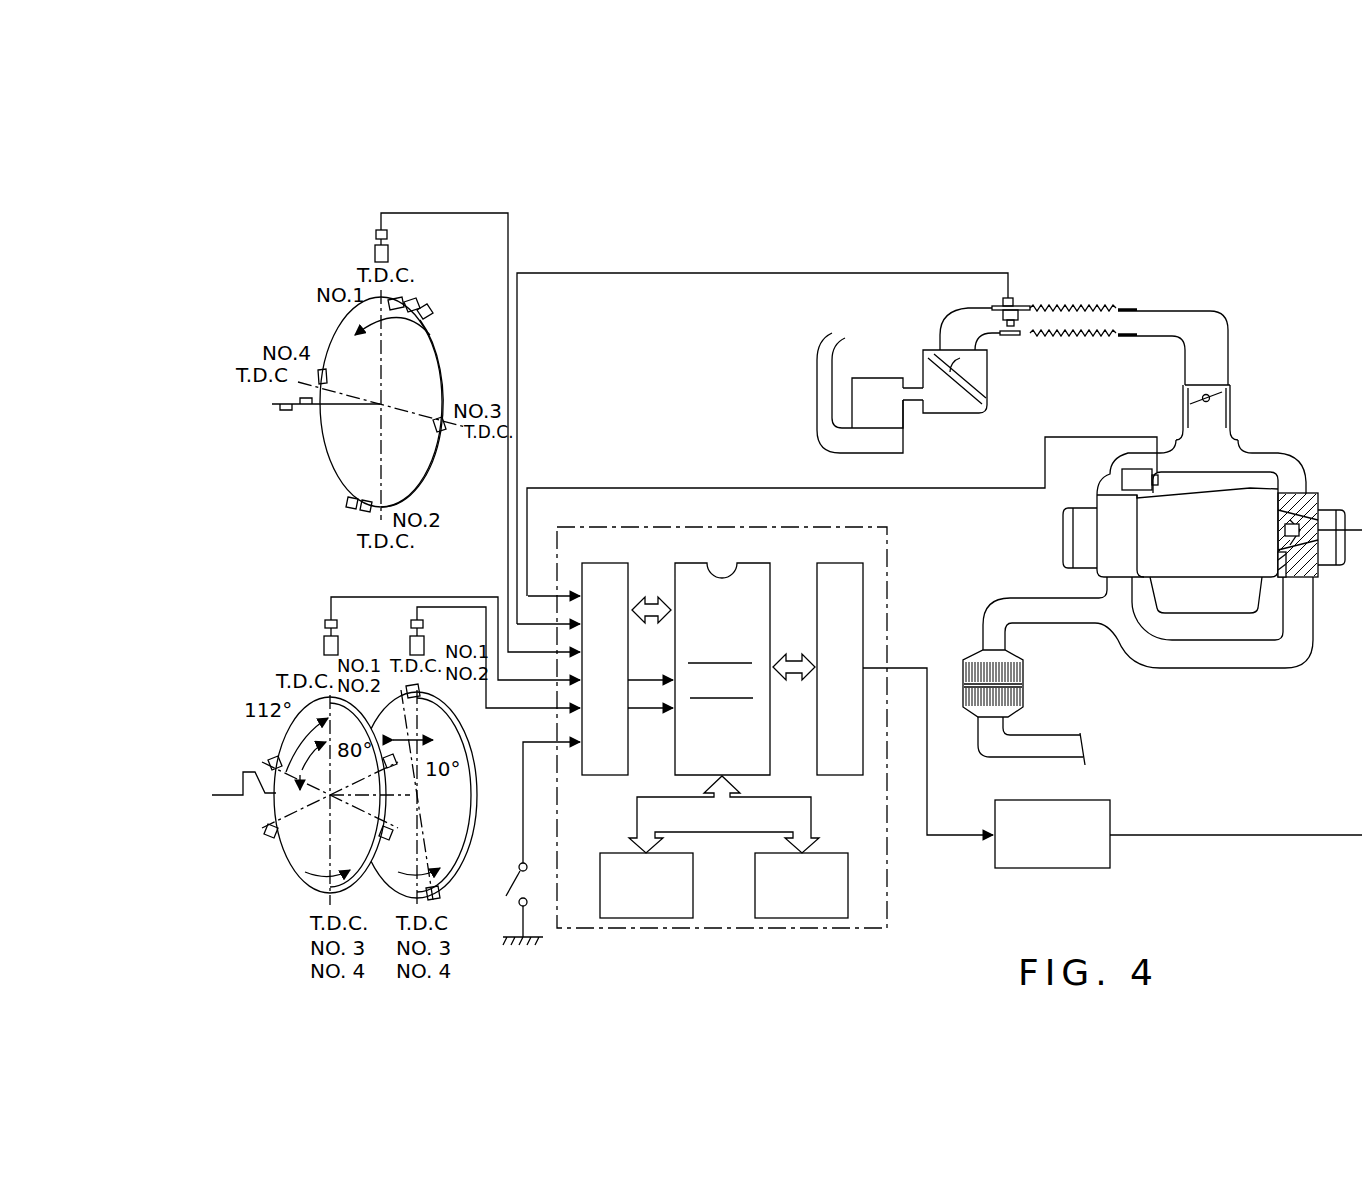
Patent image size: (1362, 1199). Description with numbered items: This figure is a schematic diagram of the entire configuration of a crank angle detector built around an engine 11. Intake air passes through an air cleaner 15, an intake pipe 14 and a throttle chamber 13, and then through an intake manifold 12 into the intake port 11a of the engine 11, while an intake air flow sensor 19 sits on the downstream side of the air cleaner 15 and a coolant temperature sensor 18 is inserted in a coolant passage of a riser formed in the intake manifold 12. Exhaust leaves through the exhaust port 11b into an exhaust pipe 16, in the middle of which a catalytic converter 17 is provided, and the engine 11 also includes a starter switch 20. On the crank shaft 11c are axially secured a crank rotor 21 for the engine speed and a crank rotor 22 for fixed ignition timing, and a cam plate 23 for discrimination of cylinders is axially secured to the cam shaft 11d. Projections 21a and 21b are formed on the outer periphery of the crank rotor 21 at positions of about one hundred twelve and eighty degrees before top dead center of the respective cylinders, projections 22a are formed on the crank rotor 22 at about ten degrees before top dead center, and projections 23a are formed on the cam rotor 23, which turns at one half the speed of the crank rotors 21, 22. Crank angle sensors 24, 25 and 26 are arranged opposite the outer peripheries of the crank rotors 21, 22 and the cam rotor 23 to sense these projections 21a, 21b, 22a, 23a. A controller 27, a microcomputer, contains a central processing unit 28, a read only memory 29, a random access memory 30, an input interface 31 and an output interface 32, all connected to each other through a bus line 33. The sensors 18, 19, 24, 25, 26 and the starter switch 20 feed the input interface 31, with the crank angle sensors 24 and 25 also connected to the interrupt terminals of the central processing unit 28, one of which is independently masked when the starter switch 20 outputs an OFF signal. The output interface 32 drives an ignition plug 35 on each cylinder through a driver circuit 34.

The engine 11 is at (1320, 580).
The intake port 11a is at (1300, 500).
The exhaust port 11b is at (1280, 566).
The crank shaft 11c is at (232, 798).
The cam shaft 11d is at (300, 410).
The intake manifold 12 is at (1262, 452).
The throttle chamber 13 is at (1218, 413).
The intake pipe 14 is at (1172, 311).
The air cleaner 15 is at (926, 355).
The exhaust pipe 16 is at (1230, 660).
The catalytic converter 17 is at (1023, 686).
The coolant temperature sensor 18 is at (1157, 490).
The intake air flow sensor 19 is at (1020, 302).
The starter switch 20 is at (518, 868).
The crank rotor for engine speed 21 is at (300, 858).
The projection 21a is at (412, 784).
The projection 21b is at (274, 760).
The crank rotor for fixed ignition timing 22 is at (468, 772).
The projection 22a is at (455, 712).
The cam plate 23 is at (418, 472).
The projection 23a is at (410, 300).
The crank angle sensor 24 is at (322, 646).
The crank angle sensor 25 is at (410, 646).
The crank angle sensor 26 is at (372, 254).
The controller 27 is at (890, 548).
The central processing unit 28 is at (772, 613).
The read only memory 29 is at (835, 853).
The random access memory 30 is at (610, 852).
The input interface 31 is at (612, 563).
The output interface 32 is at (825, 563).
The bus line 33 is at (722, 830).
The driver circuit 34 is at (1178, 852).
The ignition plug 35 is at (1283, 531).